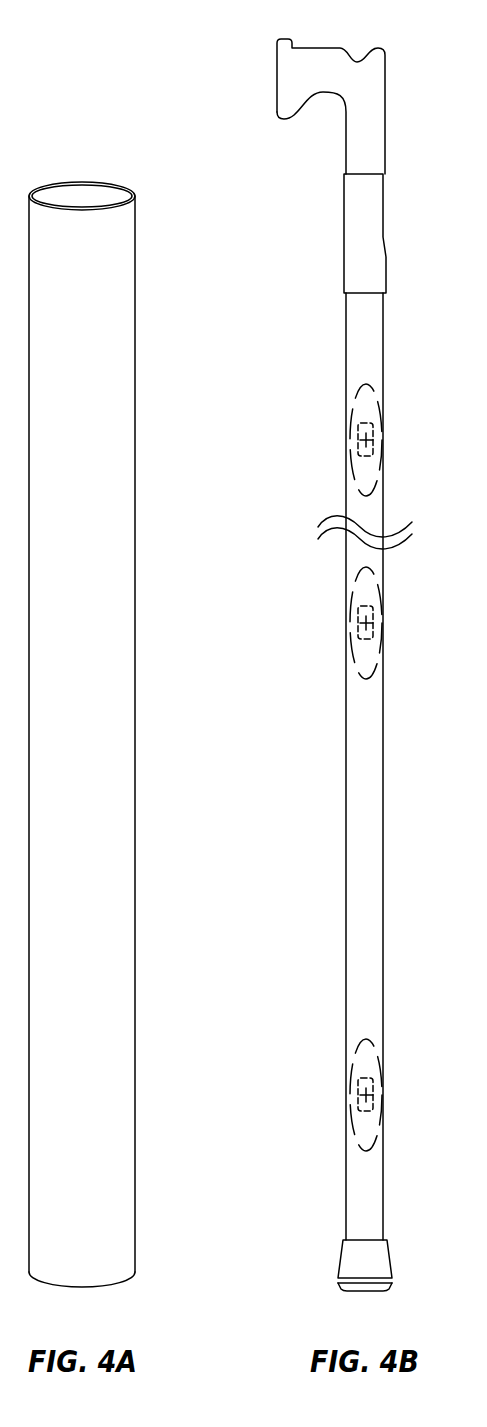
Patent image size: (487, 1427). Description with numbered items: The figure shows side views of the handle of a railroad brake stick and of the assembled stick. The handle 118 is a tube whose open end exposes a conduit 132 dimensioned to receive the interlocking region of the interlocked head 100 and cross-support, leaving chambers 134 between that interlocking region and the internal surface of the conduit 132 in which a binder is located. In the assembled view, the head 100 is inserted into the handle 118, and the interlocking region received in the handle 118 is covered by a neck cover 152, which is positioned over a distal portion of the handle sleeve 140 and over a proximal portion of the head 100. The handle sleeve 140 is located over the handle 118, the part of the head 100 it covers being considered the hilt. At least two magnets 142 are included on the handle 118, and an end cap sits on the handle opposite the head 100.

In FIG. 4B, the head 100 is at (308, 59).
In FIG. 4A, the handle 118 is at (98, 738).
In FIG. 4B, the handle 118 is at (365, 512).
In FIG. 4A, the conduit 132 is at (82, 197).
In FIG. 4B, the chambers 134 is at (412, 1203).
In FIG. 4B, the handle sleeve 140 is at (363, 312).
In FIG. 4B, the magnets 142 is at (368, 440).
In FIG. 4B, the neck cover 152 is at (386, 255).